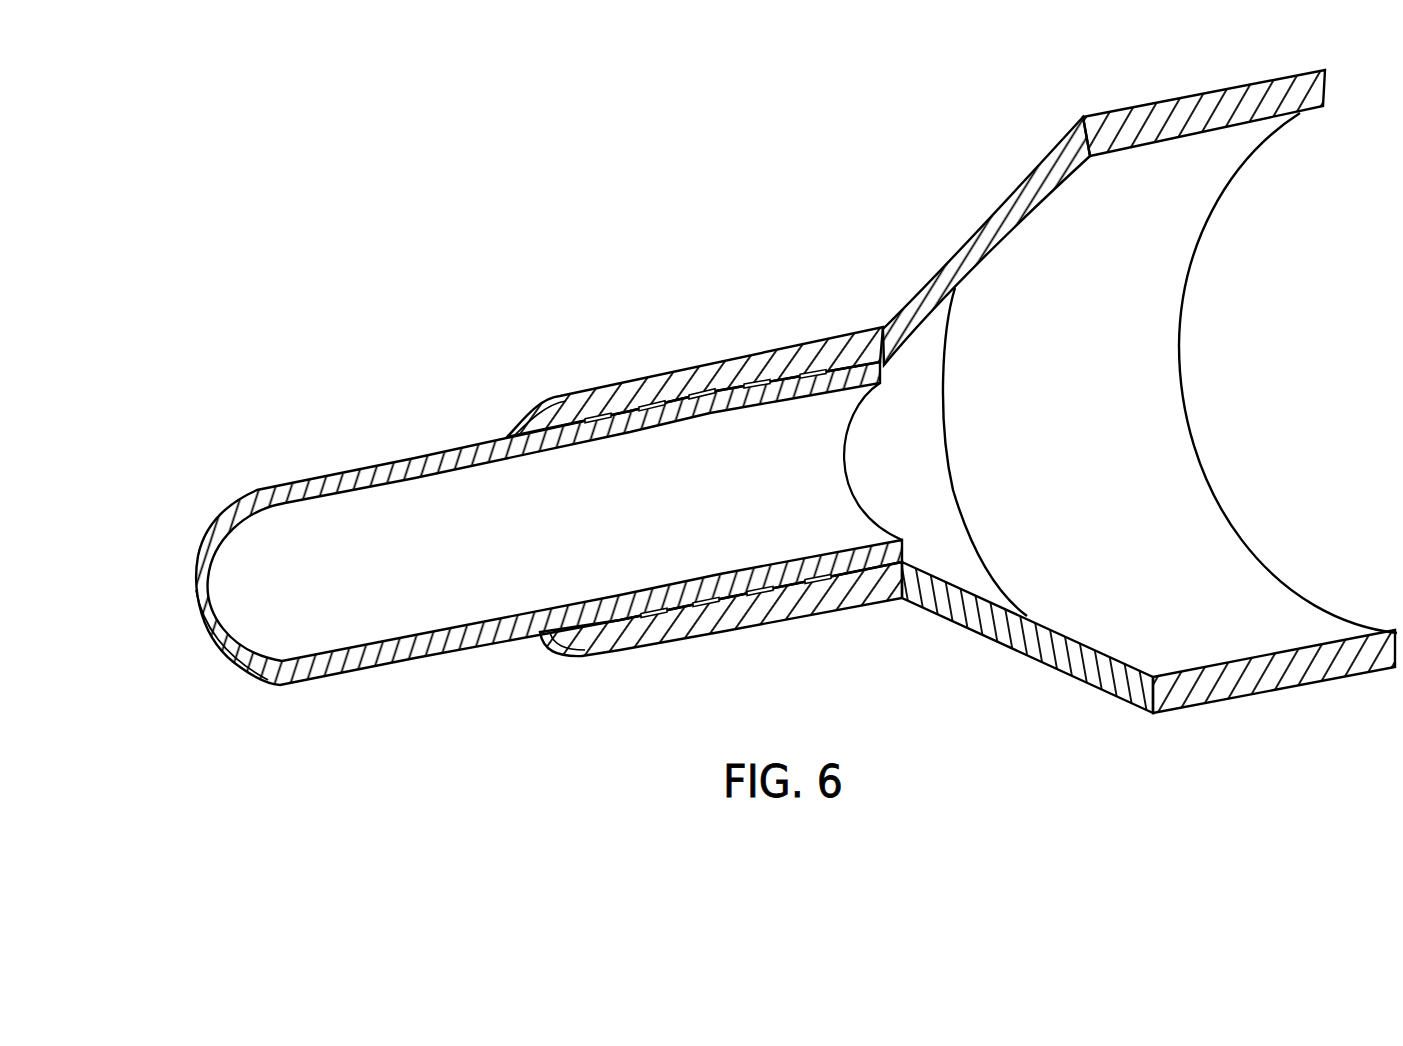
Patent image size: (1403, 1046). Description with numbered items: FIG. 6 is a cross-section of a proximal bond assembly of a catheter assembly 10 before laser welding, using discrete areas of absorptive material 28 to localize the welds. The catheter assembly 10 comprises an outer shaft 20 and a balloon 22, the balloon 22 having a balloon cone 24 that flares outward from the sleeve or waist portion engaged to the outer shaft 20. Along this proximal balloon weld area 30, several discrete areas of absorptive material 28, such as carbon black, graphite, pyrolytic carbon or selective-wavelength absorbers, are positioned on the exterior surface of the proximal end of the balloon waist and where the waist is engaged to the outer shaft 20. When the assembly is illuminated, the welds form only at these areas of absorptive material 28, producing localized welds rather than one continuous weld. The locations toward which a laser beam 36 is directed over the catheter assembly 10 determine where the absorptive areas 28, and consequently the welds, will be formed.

The catheter assembly 10 is at (796, 379).
The outer shaft 20 is at (317, 477).
The balloon 22 is at (1181, 96).
The balloon cone 24 is at (985, 222).
The absorptive material 28 is at (583, 657).
The proximal balloon weld area 30 is at (878, 322).
The laser beam 36 is at (654, 423).